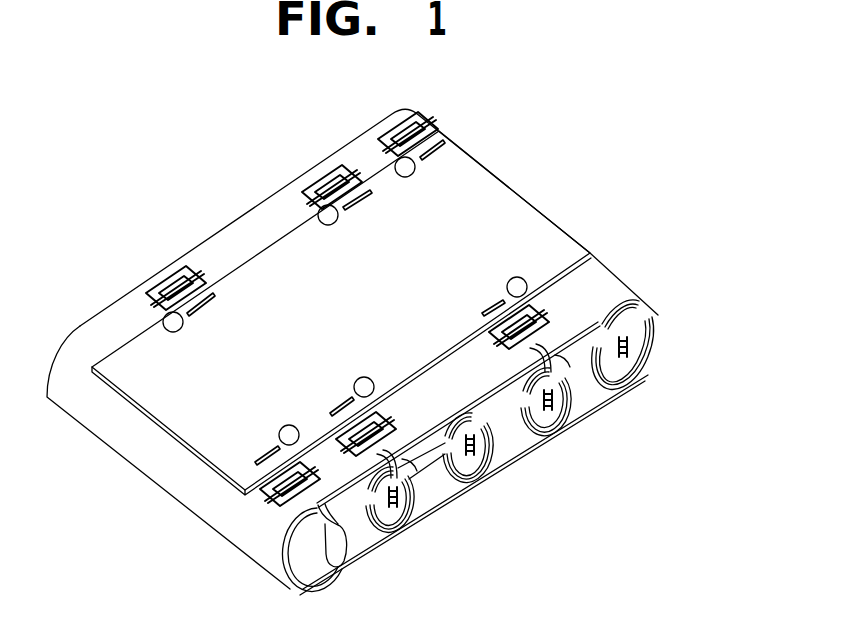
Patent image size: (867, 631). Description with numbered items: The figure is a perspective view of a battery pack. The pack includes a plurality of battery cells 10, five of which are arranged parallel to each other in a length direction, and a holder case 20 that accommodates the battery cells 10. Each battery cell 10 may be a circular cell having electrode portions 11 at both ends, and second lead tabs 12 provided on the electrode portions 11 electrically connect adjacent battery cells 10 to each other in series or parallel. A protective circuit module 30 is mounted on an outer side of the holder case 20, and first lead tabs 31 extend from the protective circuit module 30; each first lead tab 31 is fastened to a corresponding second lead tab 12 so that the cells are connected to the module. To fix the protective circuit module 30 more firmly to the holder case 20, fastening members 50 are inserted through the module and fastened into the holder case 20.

The battery cell 10 is at (653, 357).
The electrode portion 11 is at (650, 313).
The second lead tab 12 is at (366, 458).
The holder case 20 is at (222, 510).
The protective circuit module 30 is at (197, 407).
The first lead tab 31 is at (267, 490).
The fastening member 50 is at (507, 287).